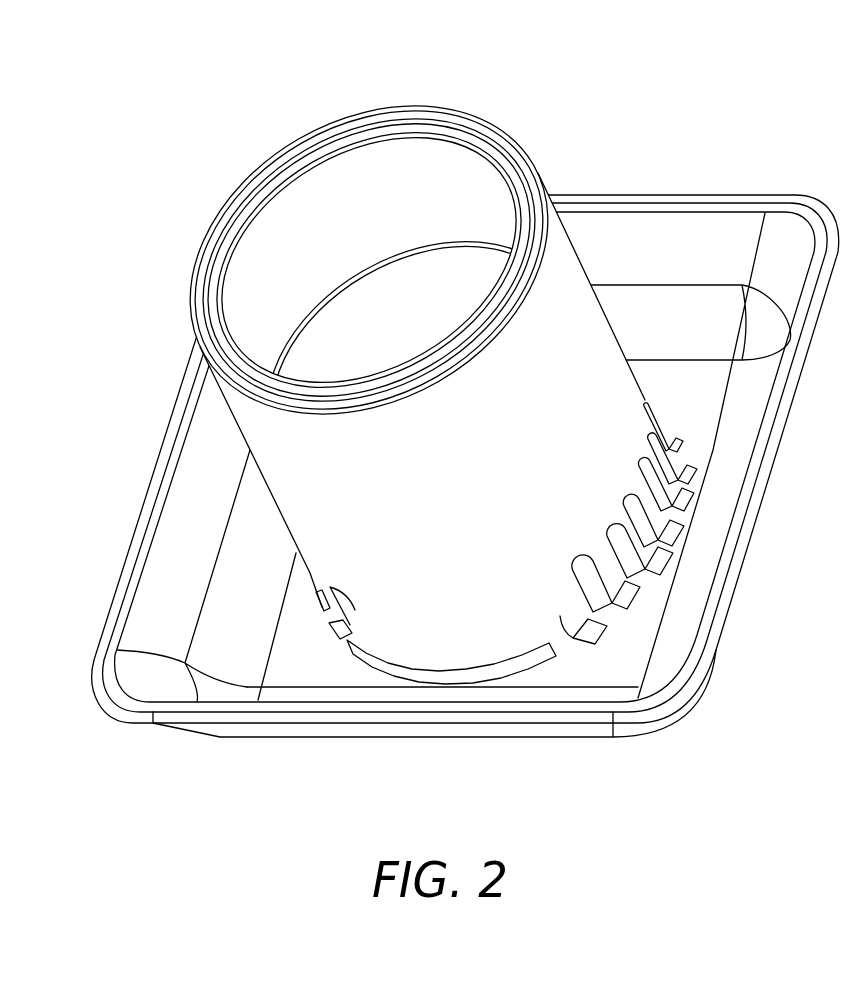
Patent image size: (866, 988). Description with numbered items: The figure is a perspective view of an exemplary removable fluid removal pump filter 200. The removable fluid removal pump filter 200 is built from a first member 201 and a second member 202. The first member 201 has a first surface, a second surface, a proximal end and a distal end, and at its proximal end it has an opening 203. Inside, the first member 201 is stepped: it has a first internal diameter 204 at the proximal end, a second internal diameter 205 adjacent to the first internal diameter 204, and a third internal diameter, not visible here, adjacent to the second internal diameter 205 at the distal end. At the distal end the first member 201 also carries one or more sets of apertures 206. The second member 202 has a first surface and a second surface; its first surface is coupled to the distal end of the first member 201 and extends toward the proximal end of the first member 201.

The removable fluid removal pump filter 200 is at (437, 387).
The first member 201 is at (247, 227).
The second member 202 is at (712, 625).
The opening 203 is at (316, 226).
The first internal diameter 204 is at (263, 192).
The second internal diameter 205 is at (383, 253).
The apertures 206 is at (672, 440).